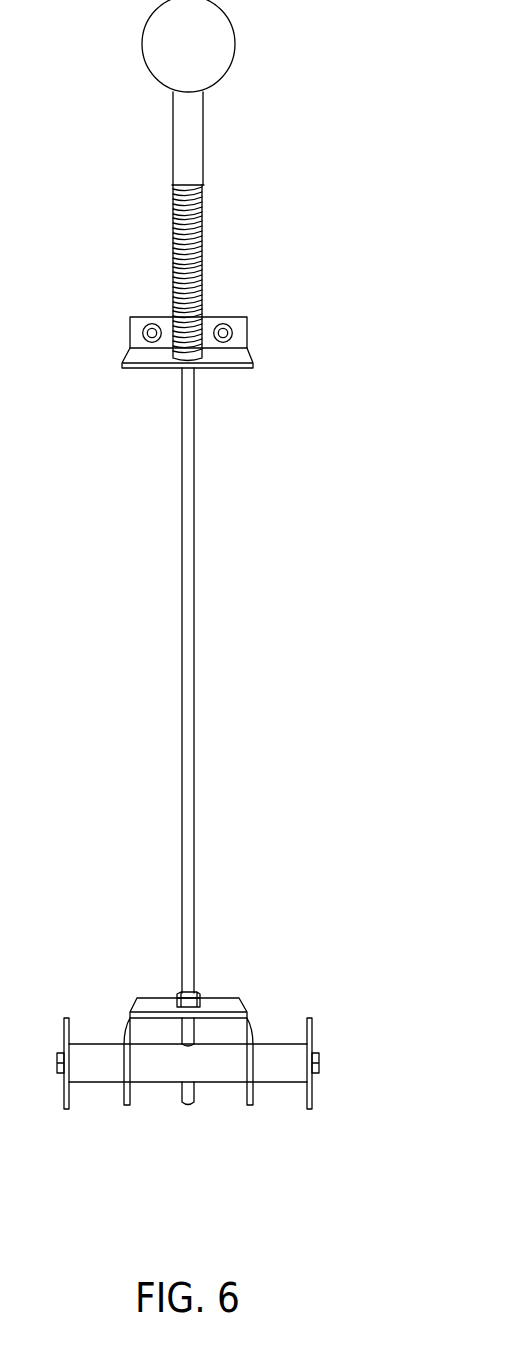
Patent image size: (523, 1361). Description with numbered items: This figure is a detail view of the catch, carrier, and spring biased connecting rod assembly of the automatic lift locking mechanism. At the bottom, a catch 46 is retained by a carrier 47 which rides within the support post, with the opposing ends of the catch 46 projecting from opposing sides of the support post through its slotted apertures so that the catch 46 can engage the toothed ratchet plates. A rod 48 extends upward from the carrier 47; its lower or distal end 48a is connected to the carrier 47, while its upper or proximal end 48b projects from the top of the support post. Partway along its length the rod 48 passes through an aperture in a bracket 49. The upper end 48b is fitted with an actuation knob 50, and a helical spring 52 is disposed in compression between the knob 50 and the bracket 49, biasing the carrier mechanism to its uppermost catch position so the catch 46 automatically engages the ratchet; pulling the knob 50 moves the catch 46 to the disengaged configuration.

The catch 46 is at (319, 1048).
The carrier 47 is at (250, 1022).
The rod 48 is at (187, 509).
The lower/distal end 48a is at (196, 993).
The upper/proximal end 48b is at (190, 107).
The bracket 49 is at (240, 353).
The actuation knob 50 is at (213, 33).
The helical spring 52 is at (202, 262).